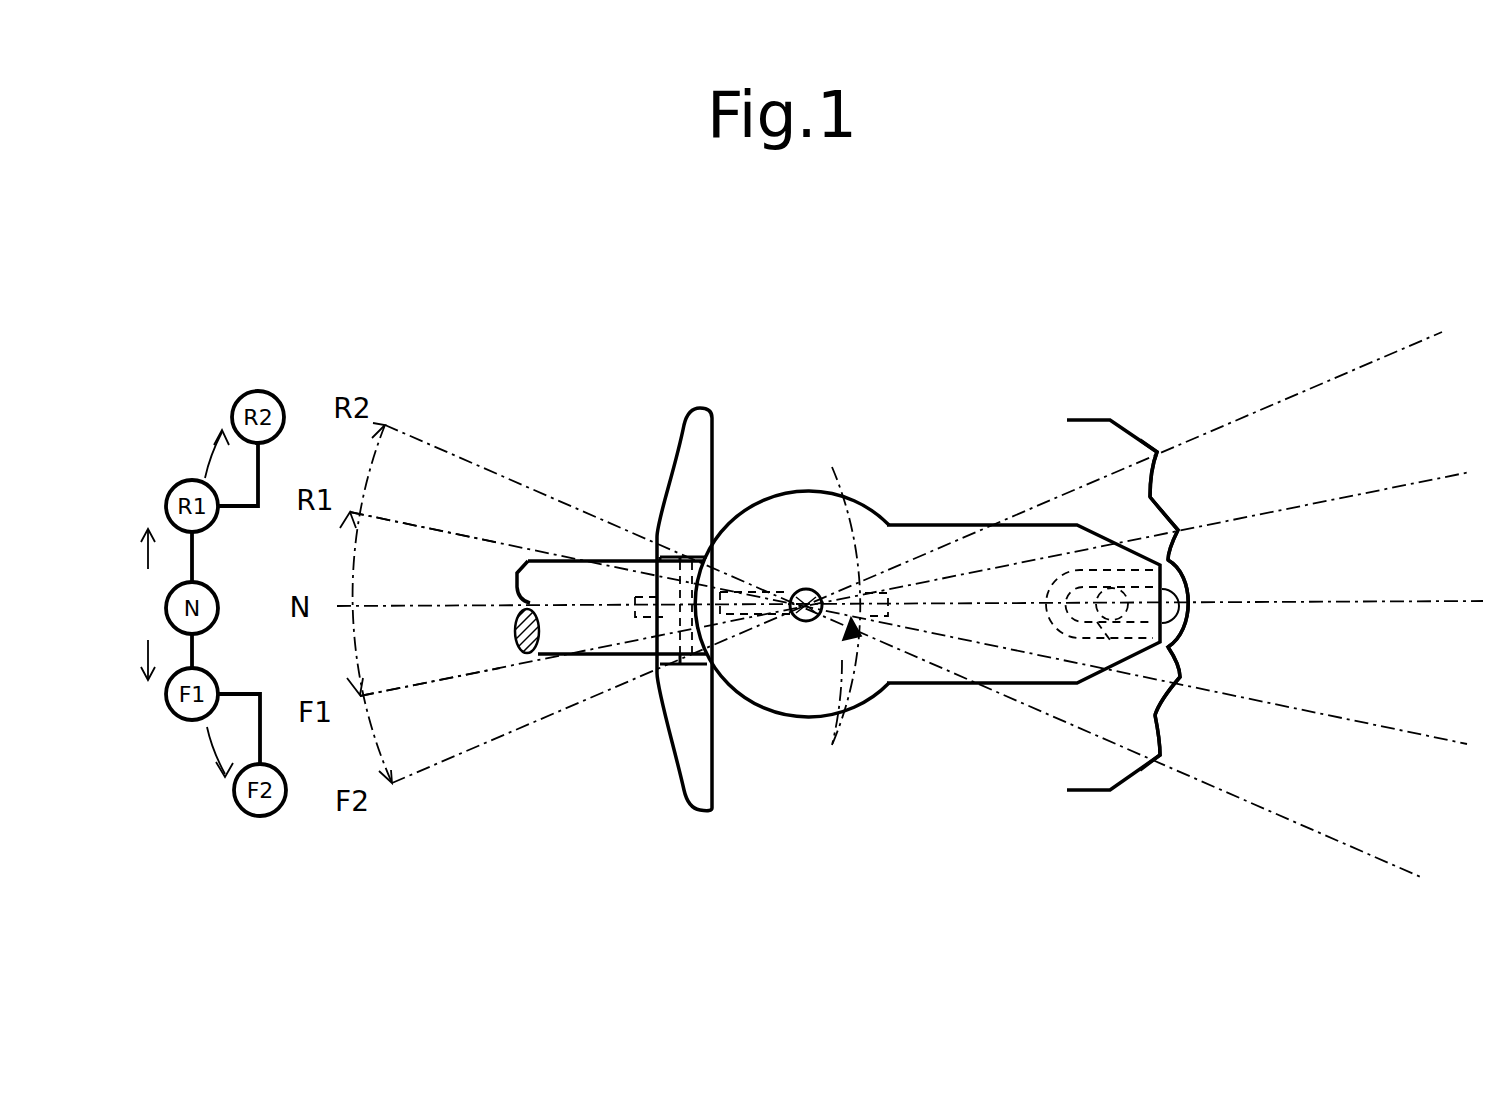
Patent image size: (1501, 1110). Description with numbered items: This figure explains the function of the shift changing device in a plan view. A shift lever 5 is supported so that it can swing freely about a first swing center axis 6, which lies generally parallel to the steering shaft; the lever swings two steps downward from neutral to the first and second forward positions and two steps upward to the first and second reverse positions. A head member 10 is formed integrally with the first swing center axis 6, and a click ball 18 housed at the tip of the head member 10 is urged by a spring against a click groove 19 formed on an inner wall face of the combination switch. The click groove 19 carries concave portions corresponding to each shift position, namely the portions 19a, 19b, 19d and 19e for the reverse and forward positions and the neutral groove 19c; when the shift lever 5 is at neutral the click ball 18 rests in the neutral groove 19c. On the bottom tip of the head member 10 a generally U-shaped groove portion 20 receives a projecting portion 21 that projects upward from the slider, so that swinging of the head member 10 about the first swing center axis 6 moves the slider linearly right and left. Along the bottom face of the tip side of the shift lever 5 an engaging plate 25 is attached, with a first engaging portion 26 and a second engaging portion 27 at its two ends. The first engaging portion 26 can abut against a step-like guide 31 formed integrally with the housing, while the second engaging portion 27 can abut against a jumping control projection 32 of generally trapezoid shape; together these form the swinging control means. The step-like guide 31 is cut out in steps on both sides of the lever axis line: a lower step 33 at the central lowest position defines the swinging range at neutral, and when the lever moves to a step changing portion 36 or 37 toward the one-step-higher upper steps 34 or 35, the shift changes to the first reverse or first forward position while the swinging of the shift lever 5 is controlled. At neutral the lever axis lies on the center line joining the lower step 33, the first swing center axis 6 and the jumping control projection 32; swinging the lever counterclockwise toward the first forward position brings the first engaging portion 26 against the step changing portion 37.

The shift lever 5 is at (543, 573).
The first swing center axis 6 is at (802, 587).
The head member 10 is at (922, 528).
The click ball 18 is at (1182, 588).
The click groove 19 is at (1088, 412).
The click groove concave portion (R2 position) 19a is at (1158, 452).
The click groove concave portion (R1 position) 19b is at (1180, 530).
The neutral groove 19c is at (1192, 603).
The click groove concave portion (F1 position) 19d is at (1183, 677).
The click groove concave portion (F2 position) 19e is at (1168, 762).
The groove portion 20 is at (1102, 695).
The projecting portion 21 is at (1102, 674).
The engaging plate 25 is at (718, 592).
The first engaging portion 26 is at (640, 606).
The second engaging portion 27 is at (836, 591).
The step-like guide 31 is at (620, 669).
The jumping control projection 32 is at (841, 700).
The lower step 33 is at (425, 555).
The upper step 34 is at (653, 544).
The upper step 35 is at (655, 660).
The step changing portion 36 is at (650, 592).
The step changing portion 37 is at (430, 663).